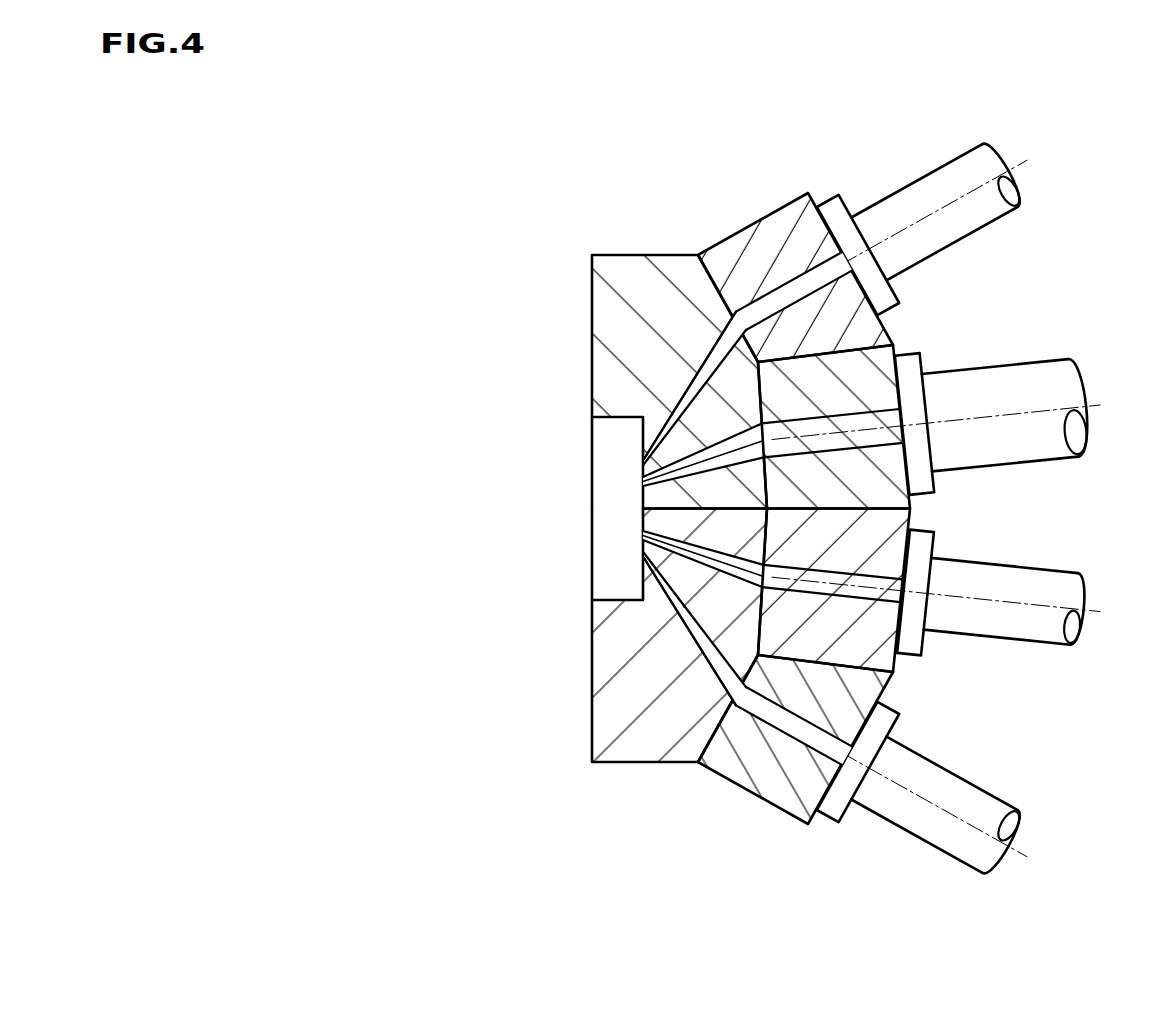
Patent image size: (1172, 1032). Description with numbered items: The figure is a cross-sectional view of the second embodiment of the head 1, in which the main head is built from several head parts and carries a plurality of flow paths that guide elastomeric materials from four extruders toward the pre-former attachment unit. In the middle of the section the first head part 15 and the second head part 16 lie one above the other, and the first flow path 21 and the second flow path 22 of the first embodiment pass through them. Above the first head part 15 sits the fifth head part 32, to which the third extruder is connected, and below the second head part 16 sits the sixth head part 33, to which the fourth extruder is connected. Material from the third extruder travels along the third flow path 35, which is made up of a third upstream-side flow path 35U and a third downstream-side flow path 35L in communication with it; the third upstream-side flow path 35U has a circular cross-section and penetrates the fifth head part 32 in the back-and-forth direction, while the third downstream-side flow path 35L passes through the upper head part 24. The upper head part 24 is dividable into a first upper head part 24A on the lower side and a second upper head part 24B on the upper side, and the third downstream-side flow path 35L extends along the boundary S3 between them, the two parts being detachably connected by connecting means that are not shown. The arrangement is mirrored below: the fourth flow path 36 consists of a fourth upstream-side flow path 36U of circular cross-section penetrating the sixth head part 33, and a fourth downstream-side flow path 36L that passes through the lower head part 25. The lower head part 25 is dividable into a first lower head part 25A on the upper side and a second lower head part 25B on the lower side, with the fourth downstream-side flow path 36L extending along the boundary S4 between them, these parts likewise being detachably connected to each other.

The head 1 is at (578, 228).
The first head part 15 is at (867, 372).
The second head part 16 is at (867, 645).
The first flow path 21 is at (873, 438).
The second flow path 22 is at (873, 580).
The upper head part 24 is at (659, 382).
The first upper head part 24A is at (703, 440).
The second upper head part 24B is at (630, 340).
The lower head part 25 is at (658, 636).
The first lower head part 25A is at (703, 577).
The second lower head part 25B is at (630, 677).
The fifth head part 32 is at (785, 237).
The sixth head part 33 is at (785, 780).
The third flow path 35 is at (742, 275).
The third downstream-side flow path 35L is at (712, 347).
The third upstream-side flow path 35U is at (765, 303).
The fourth flow path 36 is at (742, 743).
The fourth downstream-side flow path 36L is at (712, 670).
The fourth upstream-side flow path 36U is at (765, 714).
The boundary S3 is at (700, 436).
The boundary S4 is at (700, 581).